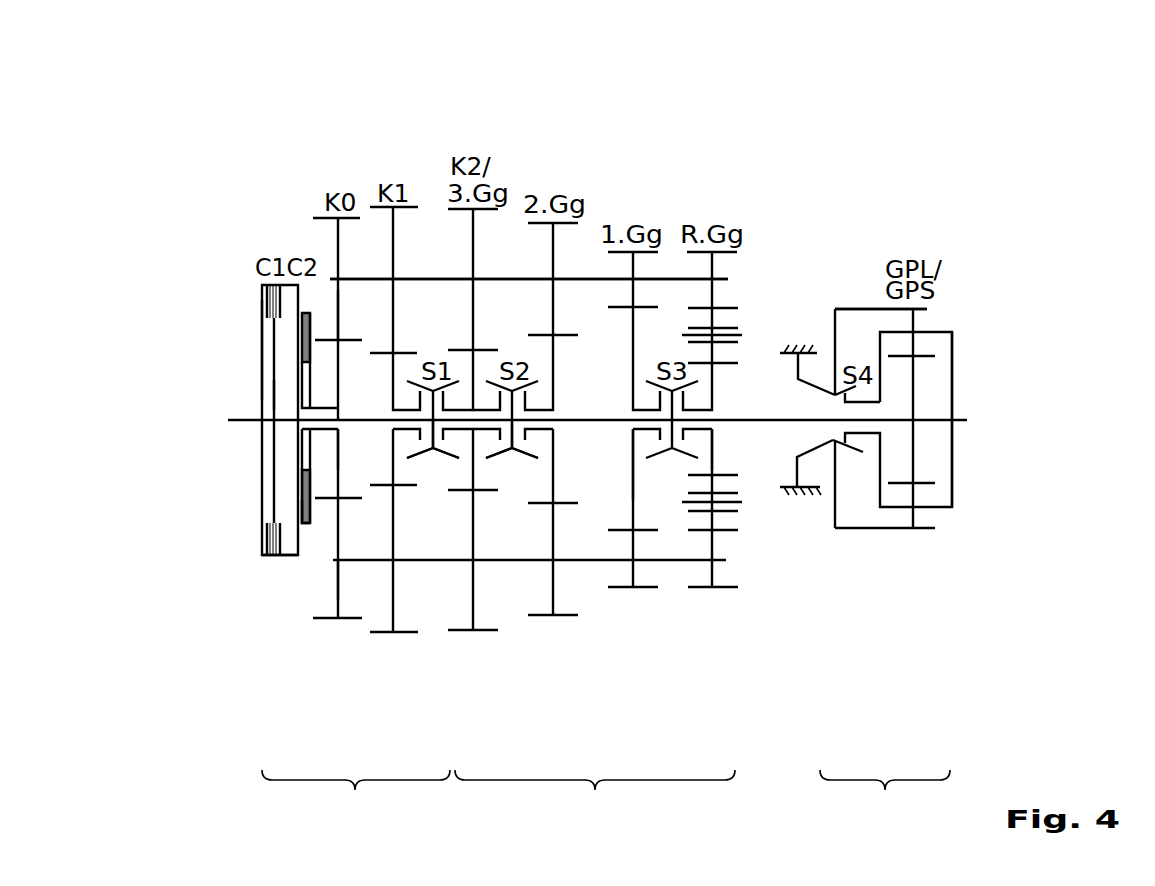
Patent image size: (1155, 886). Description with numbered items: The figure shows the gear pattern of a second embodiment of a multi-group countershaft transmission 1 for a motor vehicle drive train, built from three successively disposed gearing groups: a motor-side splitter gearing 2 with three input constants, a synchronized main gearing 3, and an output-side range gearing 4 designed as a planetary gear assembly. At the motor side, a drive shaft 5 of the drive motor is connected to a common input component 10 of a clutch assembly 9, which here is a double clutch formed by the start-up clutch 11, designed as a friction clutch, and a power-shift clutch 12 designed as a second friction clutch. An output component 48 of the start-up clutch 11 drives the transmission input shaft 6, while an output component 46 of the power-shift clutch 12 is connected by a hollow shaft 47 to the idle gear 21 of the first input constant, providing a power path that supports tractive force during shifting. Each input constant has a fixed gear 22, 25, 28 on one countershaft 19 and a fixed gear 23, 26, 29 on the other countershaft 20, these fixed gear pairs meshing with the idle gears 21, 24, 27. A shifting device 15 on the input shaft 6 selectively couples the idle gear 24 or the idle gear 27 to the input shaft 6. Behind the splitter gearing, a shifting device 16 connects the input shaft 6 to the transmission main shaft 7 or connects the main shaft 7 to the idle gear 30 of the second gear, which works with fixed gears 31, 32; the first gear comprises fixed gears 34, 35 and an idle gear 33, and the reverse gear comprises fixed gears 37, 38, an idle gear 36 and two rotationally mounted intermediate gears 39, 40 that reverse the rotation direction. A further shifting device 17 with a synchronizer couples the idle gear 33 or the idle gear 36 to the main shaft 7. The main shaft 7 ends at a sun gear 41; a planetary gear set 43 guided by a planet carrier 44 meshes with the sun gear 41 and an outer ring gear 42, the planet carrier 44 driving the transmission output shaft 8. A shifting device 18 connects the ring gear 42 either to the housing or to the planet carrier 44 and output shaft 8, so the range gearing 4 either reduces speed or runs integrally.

The countershaft transmission 1 is at (240, 262).
The splitter gearing 2 is at (356, 796).
The main gearing 3 is at (595, 796).
The range gearing 4 is at (885, 796).
The drive shaft 5 is at (243, 419).
The transmission input shaft 6 is at (383, 562).
The transmission main shaft 7 is at (608, 588).
The transmission output shaft 8 is at (963, 421).
The clutch assembly 9 is at (252, 557).
The input component 10 is at (257, 349).
The start-up clutch 11 is at (272, 392).
The power-shift clutch 12 is at (337, 573).
The shifting device 15 is at (472, 243).
The shifting device 16 is at (512, 353).
The third synchronizer 17 is at (668, 353).
The shifting device 18 is at (837, 307).
The countershaft 19 is at (322, 256).
The countershaft 20 is at (337, 586).
The idle gear 21 is at (338, 447).
The fixed gear 22 is at (337, 313).
The fixed gear 23 is at (307, 527).
The idle gear 24 is at (435, 465).
The fixed gear 25 is at (393, 230).
The fixed gear 26 is at (393, 613).
The idle gear 27 is at (478, 464).
The fixed gear 28 is at (437, 353).
The fixed gear 29 is at (472, 590).
The idle gear 30 is at (552, 472).
The fixed gear 31 is at (553, 259).
The fixed gear 32 is at (590, 420).
The idle gear 33 is at (632, 483).
The fixed gear 34 is at (632, 270).
The fixed gear 35 is at (802, 343).
The idle gear 36 is at (713, 450).
The fixed gear 37 is at (712, 269).
The fixed gear 38 is at (713, 572).
The intermediate gear 39 is at (712, 320).
The intermediate gear 40 is at (713, 519).
The sun gear 41 is at (913, 377).
The ring gear 42 is at (873, 308).
The planetary gear set 43 is at (923, 322).
The planet carrier 44 is at (952, 395).
The output component 46 is at (302, 515).
The hollow shaft 47 is at (318, 407).
The output component 48 is at (176, 371).